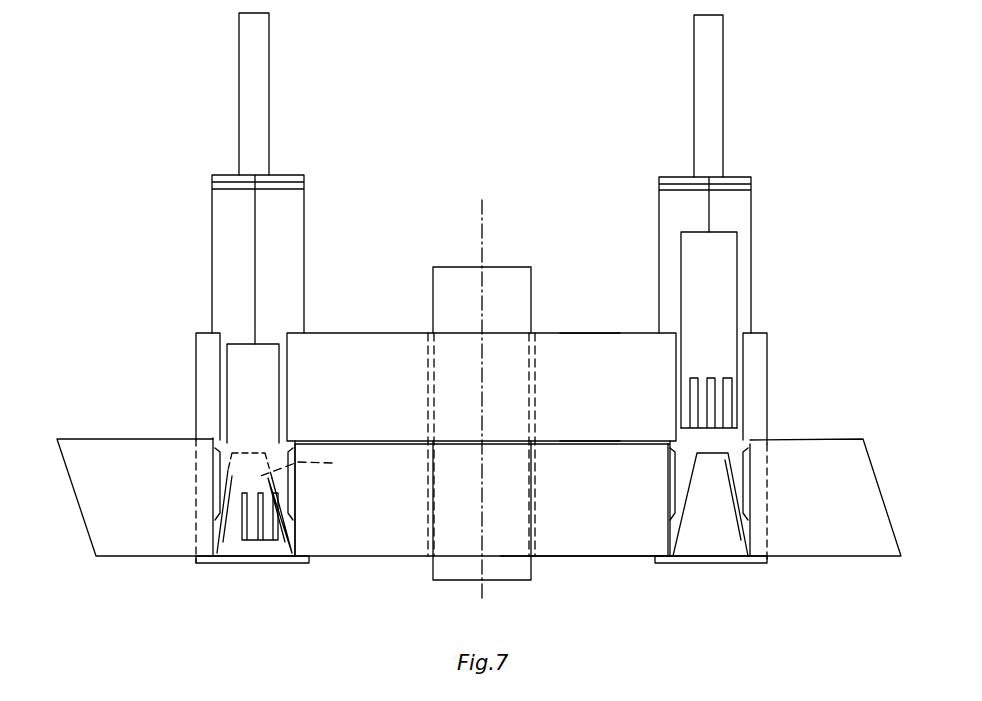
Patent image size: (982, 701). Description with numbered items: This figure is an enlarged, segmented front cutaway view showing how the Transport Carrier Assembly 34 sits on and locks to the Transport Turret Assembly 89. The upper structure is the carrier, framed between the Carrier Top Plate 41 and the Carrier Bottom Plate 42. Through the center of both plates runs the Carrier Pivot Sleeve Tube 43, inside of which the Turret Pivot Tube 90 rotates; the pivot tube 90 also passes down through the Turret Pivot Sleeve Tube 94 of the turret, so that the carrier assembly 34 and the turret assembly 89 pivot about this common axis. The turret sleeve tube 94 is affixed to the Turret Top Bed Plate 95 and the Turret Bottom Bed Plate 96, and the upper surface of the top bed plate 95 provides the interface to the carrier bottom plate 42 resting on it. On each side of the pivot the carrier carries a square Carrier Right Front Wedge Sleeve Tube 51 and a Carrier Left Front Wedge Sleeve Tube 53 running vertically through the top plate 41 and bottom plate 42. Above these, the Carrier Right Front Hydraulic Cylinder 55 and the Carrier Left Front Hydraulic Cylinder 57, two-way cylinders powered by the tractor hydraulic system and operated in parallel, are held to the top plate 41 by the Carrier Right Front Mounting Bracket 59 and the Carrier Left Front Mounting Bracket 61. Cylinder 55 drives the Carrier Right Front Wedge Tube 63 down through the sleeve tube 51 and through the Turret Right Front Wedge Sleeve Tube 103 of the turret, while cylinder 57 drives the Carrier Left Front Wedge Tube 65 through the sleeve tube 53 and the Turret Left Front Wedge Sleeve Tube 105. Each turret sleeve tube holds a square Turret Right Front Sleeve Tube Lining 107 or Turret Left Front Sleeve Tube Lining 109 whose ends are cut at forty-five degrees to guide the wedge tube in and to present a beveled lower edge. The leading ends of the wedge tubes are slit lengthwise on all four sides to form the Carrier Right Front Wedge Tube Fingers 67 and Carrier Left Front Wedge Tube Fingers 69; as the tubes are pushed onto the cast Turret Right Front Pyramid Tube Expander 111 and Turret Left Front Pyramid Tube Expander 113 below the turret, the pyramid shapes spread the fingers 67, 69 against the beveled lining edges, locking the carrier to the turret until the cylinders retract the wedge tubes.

The Transport Carrier Assembly 34 is at (630, 352).
The Carrier Top Plate 41 is at (587, 334).
The Carrier Bottom Plate 42 is at (588, 441).
The Carrier Pivot Sleeve Tube 43 is at (428, 388).
The Carrier Right Front Wedge Sleeve Tube 51 is at (220, 370).
The Carrier Left Front Wedge Sleeve Tube 53 is at (745, 357).
The Carrier Right Front Hydraulic Cylinder 55 is at (246, 89).
The Carrier Left Front Hydraulic Cylinder 57 is at (714, 83).
The Carrier Right Front Mounting Bracket 59 is at (217, 212).
The Carrier Left Front Mounting Bracket 61 is at (664, 198).
The Carrier Right Front Wedge Tube 63 is at (248, 402).
The Carrier Left Front Wedge Tube 65 is at (718, 285).
The Carrier Right Front Wedge Tube Fingers 67 is at (252, 540).
The Carrier Left Front Wedge Tube Fingers 69 is at (728, 403).
The Transport Turret Assembly 89 is at (389, 547).
The Turret Pivot Tube 90 is at (437, 283).
The Turret Pivot Sleeve Tube 94 is at (428, 478).
The Turret Top Bed Plate 95 is at (620, 444).
The Turret Bottom Bed Plate 96 is at (572, 556).
The Turret Right Front Wedge Sleeve Tube 103 is at (213, 447).
The Turret Left Front Wedge Sleeve Tube 105 is at (750, 531).
The Turret Right Front Sleeve Tube Lining 107 is at (218, 493).
The Turret Left Front Sleeve Tube Lining 109 is at (748, 480).
The Turret Right Front Pyramid Tube Expander 111 is at (316, 467).
The Turret Left Front Pyramid Tube Expander 113 is at (705, 545).